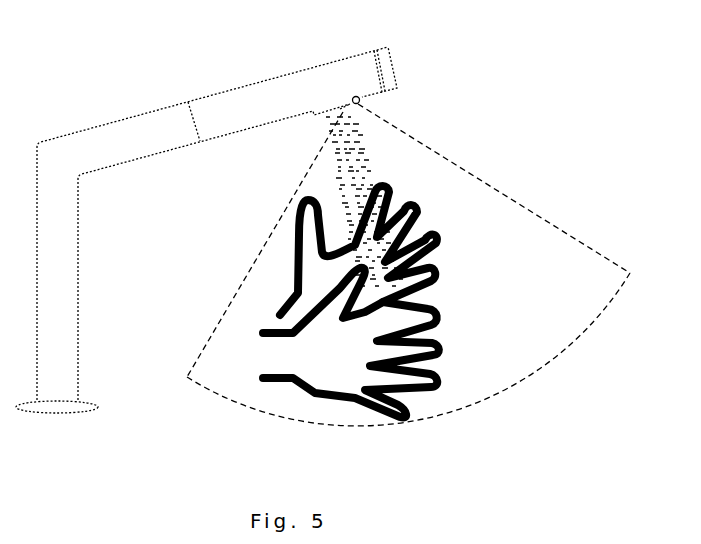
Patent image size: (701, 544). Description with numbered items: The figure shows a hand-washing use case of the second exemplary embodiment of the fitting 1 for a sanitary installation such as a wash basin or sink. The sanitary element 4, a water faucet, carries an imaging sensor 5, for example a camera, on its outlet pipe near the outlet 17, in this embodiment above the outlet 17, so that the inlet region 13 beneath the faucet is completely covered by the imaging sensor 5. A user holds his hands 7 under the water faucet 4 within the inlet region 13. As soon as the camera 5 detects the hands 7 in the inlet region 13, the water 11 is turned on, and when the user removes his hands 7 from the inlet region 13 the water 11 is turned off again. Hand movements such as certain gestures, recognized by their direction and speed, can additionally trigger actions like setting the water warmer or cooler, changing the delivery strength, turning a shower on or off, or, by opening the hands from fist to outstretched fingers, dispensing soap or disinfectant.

The fitting 1 is at (450, 45).
The sanitary element 4 is at (207, 52).
The imaging sensor 5 is at (372, 100).
The outlet 17 is at (348, 118).
The water 11 is at (370, 159).
The inlet region 13 is at (242, 272).
The hands 7 is at (447, 330).